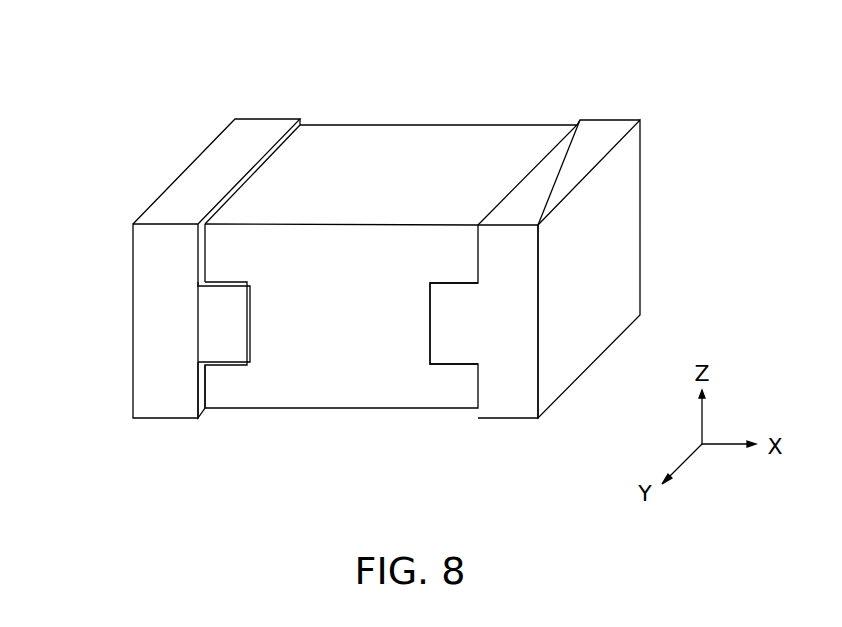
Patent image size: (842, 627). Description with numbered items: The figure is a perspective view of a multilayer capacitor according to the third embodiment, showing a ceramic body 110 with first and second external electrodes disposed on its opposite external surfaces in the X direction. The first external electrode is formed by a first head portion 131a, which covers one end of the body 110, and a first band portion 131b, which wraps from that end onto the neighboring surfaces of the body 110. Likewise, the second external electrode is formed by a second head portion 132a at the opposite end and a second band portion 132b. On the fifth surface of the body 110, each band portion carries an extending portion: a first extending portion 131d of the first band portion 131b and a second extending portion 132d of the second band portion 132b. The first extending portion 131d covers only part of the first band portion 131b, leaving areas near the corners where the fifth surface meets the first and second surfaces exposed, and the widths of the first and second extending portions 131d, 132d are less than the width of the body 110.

The body 110 is at (430, 130).
The first head portion 131a is at (158, 297).
The first band portion 131b is at (251, 147).
The first extending portion 131d is at (227, 337).
The second head portion 132a is at (603, 250).
The second band portion 132b is at (590, 145).
The second extending portion 132d is at (452, 337).